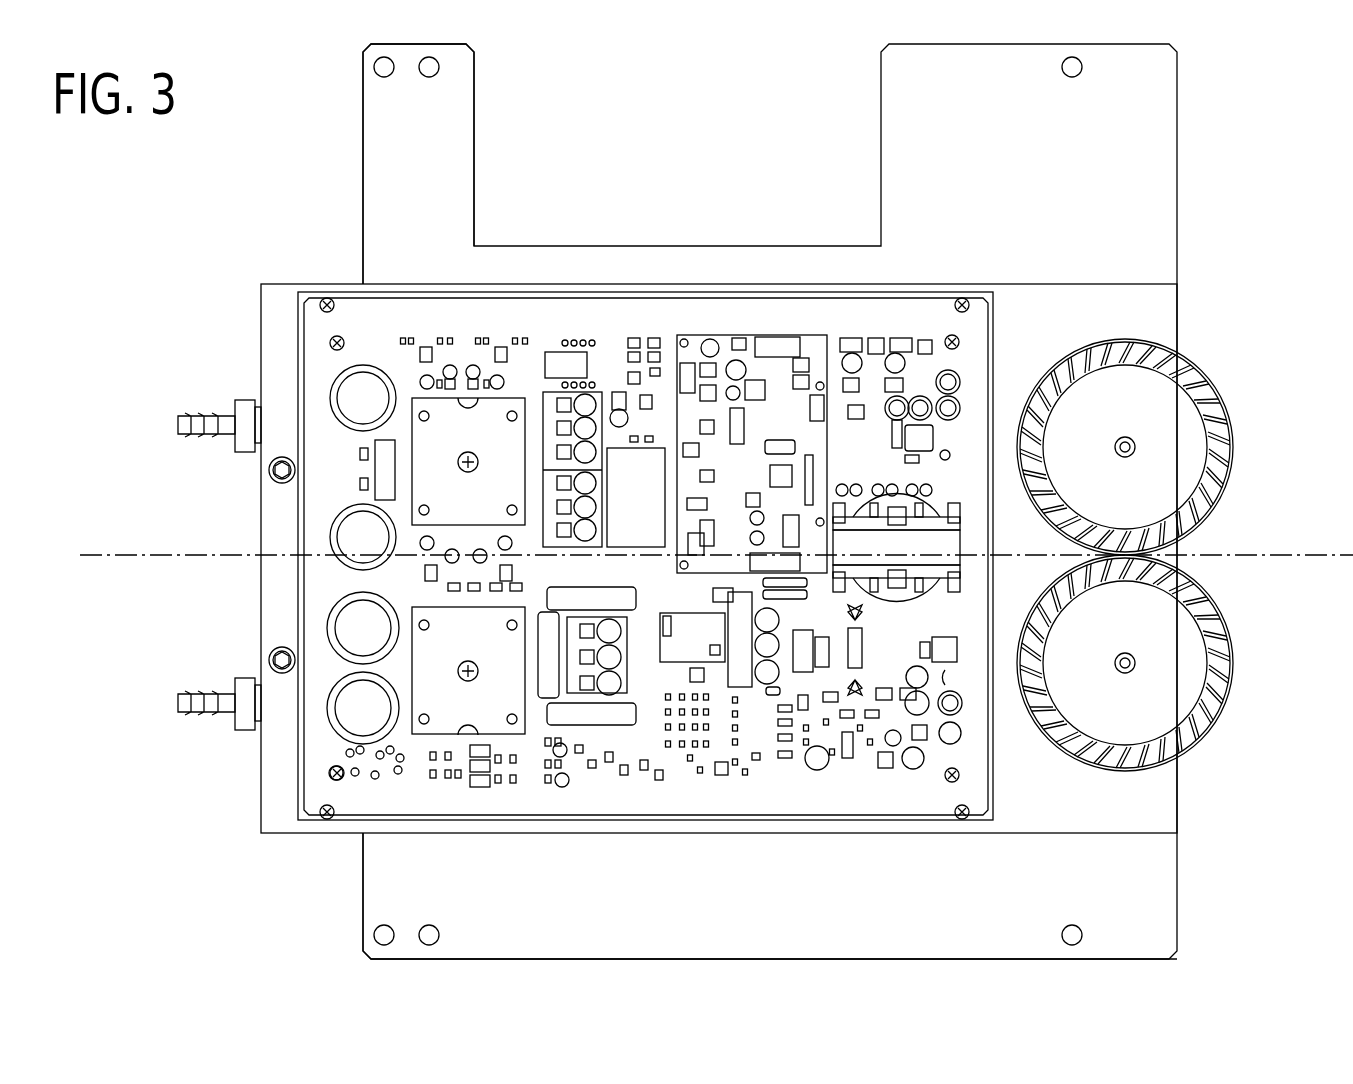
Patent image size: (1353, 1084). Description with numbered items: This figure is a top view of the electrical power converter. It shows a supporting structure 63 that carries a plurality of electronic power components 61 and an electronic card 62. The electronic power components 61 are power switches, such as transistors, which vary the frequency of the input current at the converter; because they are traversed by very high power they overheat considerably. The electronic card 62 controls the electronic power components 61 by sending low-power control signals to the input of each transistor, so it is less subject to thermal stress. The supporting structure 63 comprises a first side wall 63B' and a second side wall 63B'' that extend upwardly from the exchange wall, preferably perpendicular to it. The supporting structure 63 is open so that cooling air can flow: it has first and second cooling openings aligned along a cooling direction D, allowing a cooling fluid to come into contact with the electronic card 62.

The electronic power components 61 is at (348, 475).
The electronic card 62 is at (746, 335).
The supporting structure 63 is at (1125, 195).
The first side wall 63B' is at (695, 896).
The second side wall 63B'' is at (480, 164).
The cooling direction D is at (185, 555).